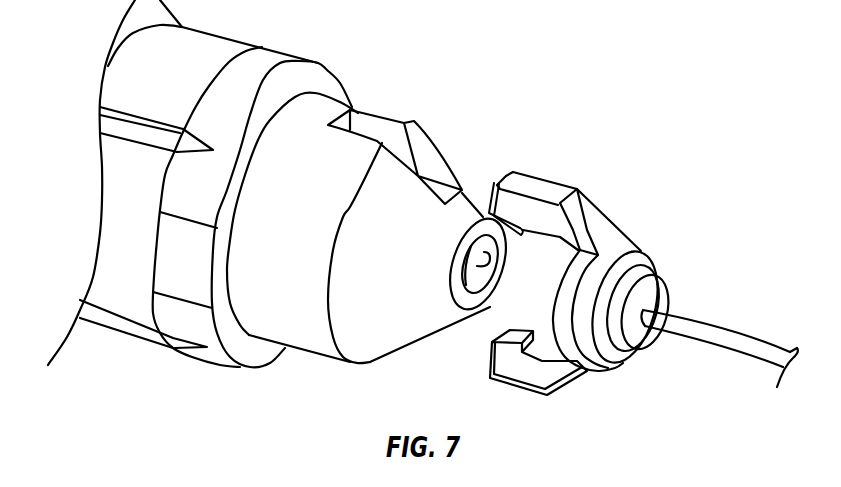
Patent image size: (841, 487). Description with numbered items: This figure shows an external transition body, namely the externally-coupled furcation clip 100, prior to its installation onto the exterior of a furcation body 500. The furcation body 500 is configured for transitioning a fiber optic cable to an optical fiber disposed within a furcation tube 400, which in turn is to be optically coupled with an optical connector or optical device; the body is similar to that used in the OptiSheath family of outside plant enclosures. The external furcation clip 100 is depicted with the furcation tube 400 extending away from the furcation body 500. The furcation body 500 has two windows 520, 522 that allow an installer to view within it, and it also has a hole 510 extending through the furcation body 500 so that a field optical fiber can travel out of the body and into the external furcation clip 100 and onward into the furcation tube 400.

The furcation body 500 is at (342, 167).
The window 520 is at (369, 127).
The window 522 is at (397, 370).
The hole 510 is at (490, 213).
The externally-coupled furcation clip 100 is at (614, 185).
The furcation tube 400 is at (702, 318).